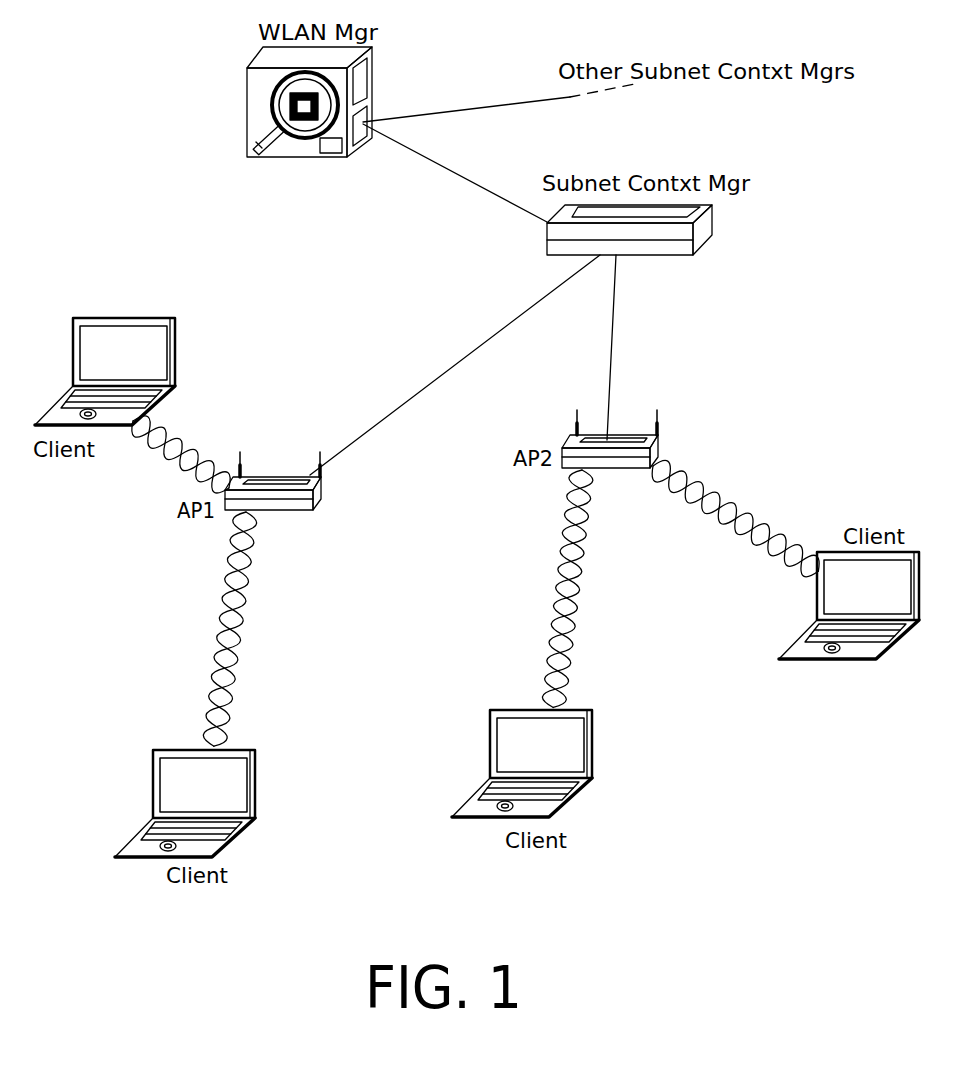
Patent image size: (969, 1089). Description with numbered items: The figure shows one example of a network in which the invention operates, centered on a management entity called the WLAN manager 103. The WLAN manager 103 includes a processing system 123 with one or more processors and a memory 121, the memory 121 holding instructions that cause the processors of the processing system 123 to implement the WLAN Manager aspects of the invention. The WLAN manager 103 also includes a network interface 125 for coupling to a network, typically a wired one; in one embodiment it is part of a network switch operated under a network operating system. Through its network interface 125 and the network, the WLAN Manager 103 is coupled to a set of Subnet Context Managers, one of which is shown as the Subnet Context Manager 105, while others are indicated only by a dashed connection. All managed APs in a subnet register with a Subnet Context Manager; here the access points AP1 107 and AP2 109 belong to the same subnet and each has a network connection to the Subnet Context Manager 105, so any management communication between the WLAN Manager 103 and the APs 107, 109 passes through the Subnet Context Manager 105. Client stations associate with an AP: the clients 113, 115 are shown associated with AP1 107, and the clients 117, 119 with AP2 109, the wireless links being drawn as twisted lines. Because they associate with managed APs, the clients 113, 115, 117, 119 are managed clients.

The WLAN manager 103 is at (283, 160).
The Subnet Context Manager 105 is at (548, 256).
The access point AP1 107 is at (297, 511).
The access point AP2 109 is at (657, 443).
The client 113 is at (252, 751).
The client 115 is at (141, 318).
The client 117 is at (795, 658).
The client 119 is at (476, 816).
The memory 121 is at (338, 158).
The processing system 123 is at (361, 82).
The network interface 125 is at (364, 117).